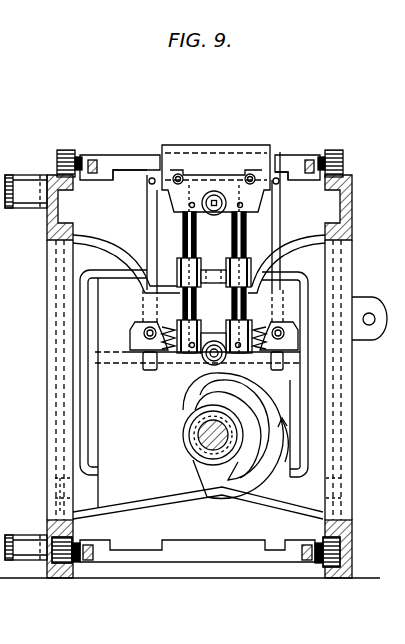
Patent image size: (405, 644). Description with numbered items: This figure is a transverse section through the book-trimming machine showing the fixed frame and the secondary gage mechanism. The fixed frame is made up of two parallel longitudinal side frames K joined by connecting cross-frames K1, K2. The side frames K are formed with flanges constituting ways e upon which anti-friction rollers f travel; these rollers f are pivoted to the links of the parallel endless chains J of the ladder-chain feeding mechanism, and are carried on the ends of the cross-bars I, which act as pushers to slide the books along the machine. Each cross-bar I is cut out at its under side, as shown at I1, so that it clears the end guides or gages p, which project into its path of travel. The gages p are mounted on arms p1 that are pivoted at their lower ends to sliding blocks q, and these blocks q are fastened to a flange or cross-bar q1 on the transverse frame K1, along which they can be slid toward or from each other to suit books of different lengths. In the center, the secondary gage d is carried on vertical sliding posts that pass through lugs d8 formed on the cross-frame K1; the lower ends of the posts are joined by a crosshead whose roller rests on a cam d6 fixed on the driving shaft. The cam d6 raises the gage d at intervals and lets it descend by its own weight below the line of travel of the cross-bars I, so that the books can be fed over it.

The side frame K is at (190, 376).
The cross-frame K1 is at (199, 377).
The cross-frame K2 is at (355, 376).
The cross-bar I is at (113, 155).
The cut-away portion I1 is at (209, 189).
The endless chain J is at (92, 160).
The anti-friction roller f is at (65, 150).
The way e is at (73, 185).
The end guide p is at (152, 178).
The arm p1 is at (286, 236).
The secondary gage d is at (234, 150).
The lug d8 is at (225, 263).
The cam d6 is at (258, 406).
The sliding block q is at (137, 347).
The cross-bar q1 is at (172, 366).